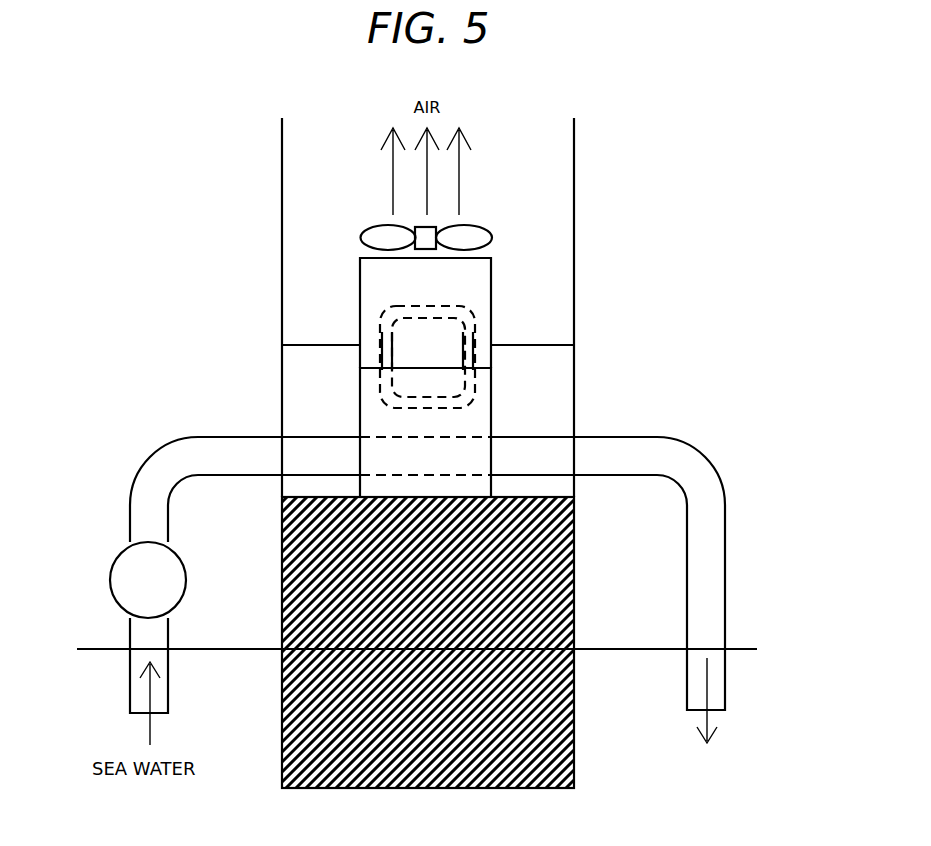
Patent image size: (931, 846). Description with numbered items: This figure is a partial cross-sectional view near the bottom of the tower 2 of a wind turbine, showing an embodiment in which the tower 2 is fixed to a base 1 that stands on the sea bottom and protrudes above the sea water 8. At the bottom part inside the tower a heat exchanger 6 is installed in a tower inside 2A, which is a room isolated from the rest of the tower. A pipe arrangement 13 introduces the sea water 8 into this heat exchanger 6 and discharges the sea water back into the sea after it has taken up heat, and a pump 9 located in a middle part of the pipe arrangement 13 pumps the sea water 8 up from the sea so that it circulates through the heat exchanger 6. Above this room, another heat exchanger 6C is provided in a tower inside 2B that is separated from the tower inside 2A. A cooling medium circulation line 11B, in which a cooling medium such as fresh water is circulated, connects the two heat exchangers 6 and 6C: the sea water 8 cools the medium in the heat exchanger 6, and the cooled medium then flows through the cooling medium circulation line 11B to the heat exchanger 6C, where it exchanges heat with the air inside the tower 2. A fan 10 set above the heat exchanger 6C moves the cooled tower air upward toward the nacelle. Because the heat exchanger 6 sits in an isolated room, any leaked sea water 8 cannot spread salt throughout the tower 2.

The base 1 is at (575, 557).
The tower 2 is at (462, 307).
The tower inside 2A is at (565, 413).
The tower inside 2B is at (565, 309).
The heat exchanger 6 is at (492, 394).
The heat exchanger 6C is at (491, 286).
The sea water 8 is at (608, 648).
The pump 9 is at (178, 548).
The fan 10 is at (478, 224).
The cooling medium circulation line 11B is at (422, 307).
The pipe arrangement 13 is at (726, 506).